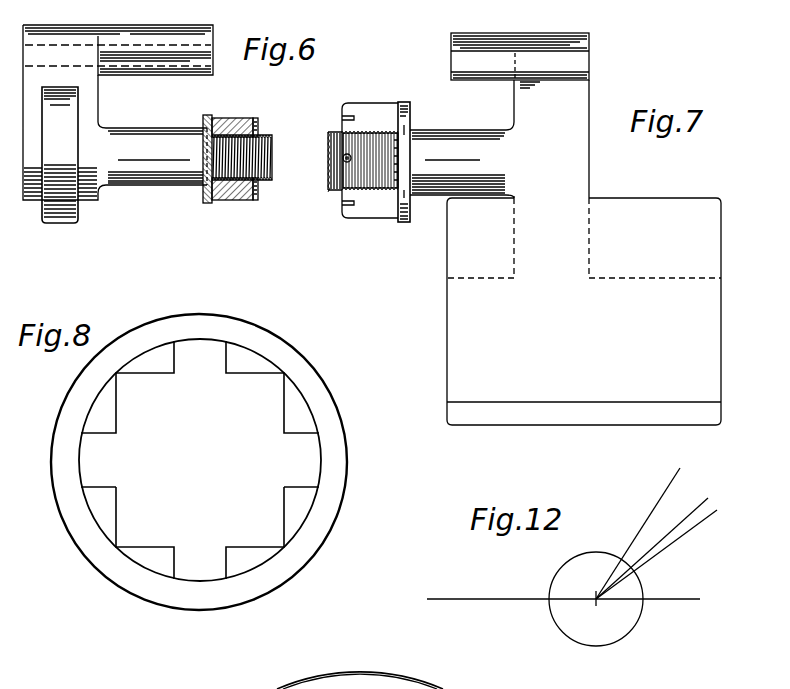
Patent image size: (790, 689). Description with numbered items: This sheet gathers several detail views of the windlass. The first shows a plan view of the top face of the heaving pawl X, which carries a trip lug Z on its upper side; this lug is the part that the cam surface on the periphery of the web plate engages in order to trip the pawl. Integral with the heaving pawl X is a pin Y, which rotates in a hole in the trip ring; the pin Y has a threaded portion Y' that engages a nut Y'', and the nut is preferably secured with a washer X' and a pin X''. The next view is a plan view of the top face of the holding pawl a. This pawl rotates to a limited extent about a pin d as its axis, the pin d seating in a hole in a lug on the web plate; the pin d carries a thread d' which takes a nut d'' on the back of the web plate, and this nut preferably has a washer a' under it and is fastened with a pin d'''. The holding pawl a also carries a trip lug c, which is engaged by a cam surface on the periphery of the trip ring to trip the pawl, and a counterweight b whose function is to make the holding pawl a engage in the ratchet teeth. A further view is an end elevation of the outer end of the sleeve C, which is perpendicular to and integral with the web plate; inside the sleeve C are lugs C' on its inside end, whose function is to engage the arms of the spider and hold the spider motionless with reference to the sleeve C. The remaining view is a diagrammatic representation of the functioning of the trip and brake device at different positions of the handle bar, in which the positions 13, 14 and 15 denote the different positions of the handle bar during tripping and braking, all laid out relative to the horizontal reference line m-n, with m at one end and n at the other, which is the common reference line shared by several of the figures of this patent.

In FIG. 6, the trip lug Z is at (148, 36).
In FIG. 6, the heaving pawl X is at (64, 124).
In FIG. 6, the pin Y is at (156, 142).
In FIG. 6, the washer X' is at (207, 177).
In FIG. 6, the pin X'' is at (258, 143).
In FIG. 6, the threaded portion Y' is at (258, 136).
In FIG. 6, the nut Y'' is at (241, 177).
In FIG. 6, the thread d' is at (319, 185).
In FIG. 6, the nut d'' is at (370, 139).
In FIG. 6, the pin d''' is at (321, 168).
In FIG. 6, the washer a' is at (413, 180).
In FIG. 7, the trip lug c is at (490, 45).
In FIG. 7, the holding pawl a is at (584, 179).
In FIG. 7, the pin d is at (462, 145).
In FIG. 7, the counterweight b is at (584, 311).
In FIG. 8, the sleeve C is at (202, 462).
In FIG. 8, the lugs C' is at (200, 460).
In FIG. 12, the horizontal reference line end m is at (511, 588).
In FIG. 12, the horizontal reference line end n is at (654, 592).
In FIG. 12, the handle bar position 13 is at (649, 521).
In FIG. 12, the handle bar position 14 is at (664, 539).
In FIG. 12, the handle bar position 15 is at (669, 550).